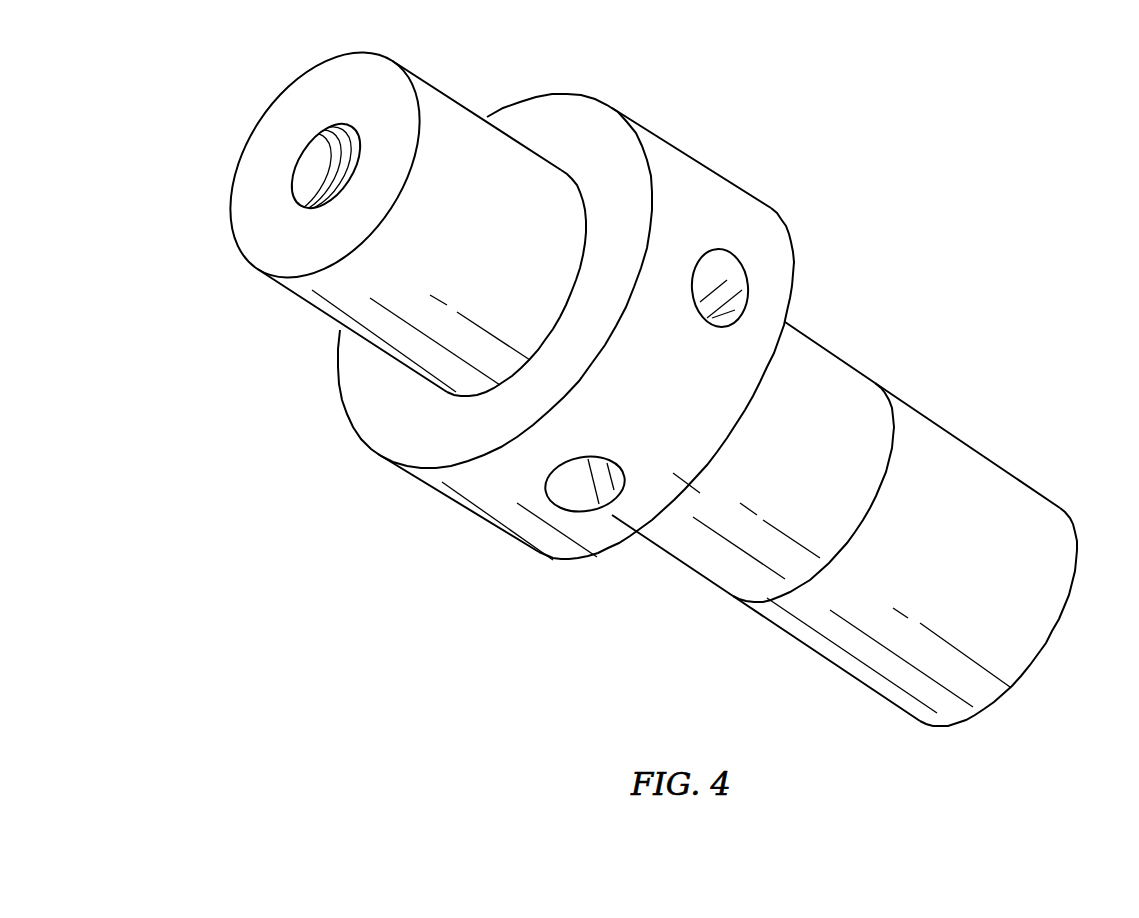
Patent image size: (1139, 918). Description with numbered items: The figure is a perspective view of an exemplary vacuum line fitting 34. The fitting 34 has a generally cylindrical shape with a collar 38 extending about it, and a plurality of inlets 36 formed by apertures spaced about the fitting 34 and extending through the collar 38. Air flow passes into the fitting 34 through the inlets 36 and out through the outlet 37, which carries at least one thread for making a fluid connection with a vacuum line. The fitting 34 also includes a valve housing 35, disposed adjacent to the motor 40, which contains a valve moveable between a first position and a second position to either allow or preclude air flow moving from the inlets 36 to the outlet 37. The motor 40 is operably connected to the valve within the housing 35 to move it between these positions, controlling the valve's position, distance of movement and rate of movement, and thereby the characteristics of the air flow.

The fitting 34 is at (647, 372).
The valve housing 35 is at (832, 394).
The inlet 36 is at (745, 282).
The outlet 37 is at (300, 187).
The collar 38 is at (703, 184).
The motor 40 is at (1002, 491).